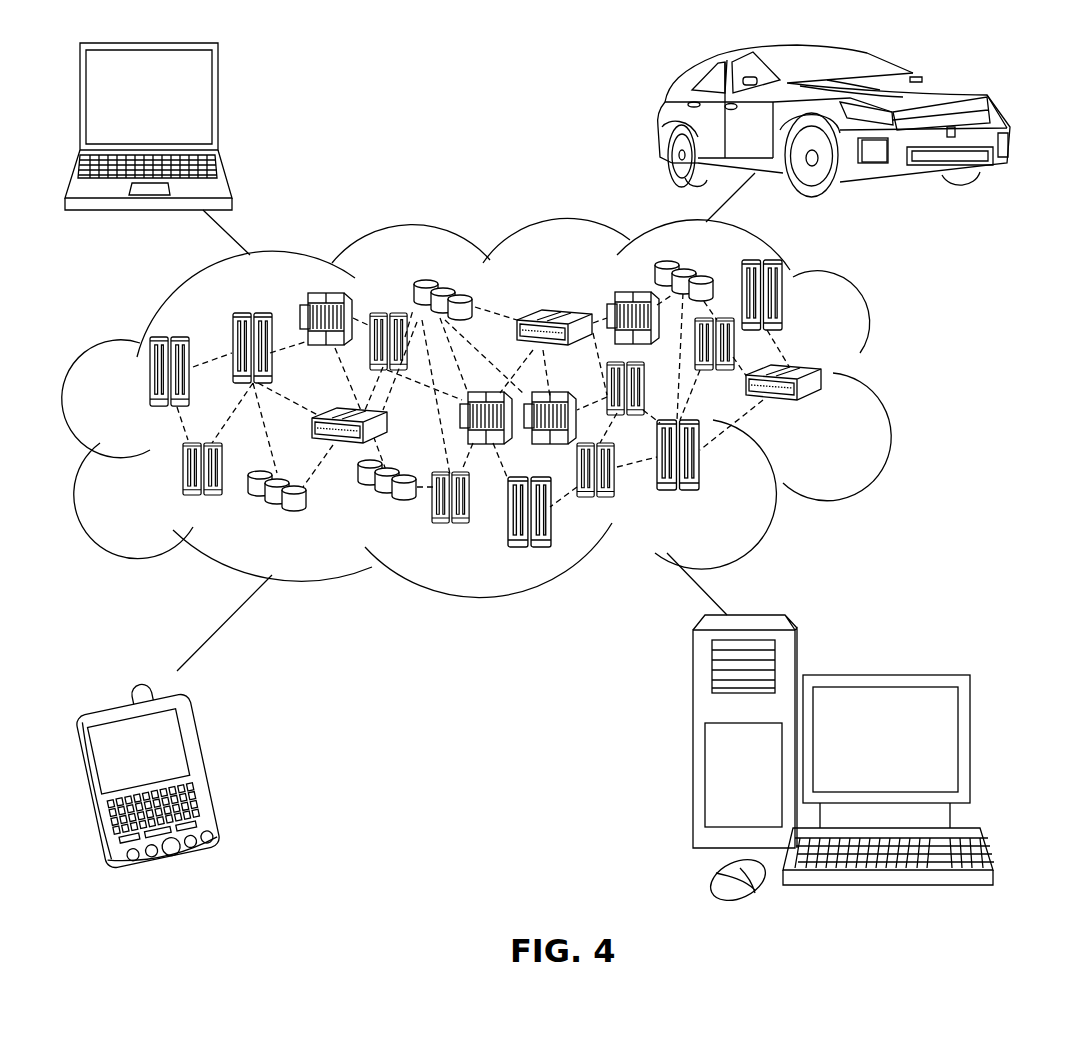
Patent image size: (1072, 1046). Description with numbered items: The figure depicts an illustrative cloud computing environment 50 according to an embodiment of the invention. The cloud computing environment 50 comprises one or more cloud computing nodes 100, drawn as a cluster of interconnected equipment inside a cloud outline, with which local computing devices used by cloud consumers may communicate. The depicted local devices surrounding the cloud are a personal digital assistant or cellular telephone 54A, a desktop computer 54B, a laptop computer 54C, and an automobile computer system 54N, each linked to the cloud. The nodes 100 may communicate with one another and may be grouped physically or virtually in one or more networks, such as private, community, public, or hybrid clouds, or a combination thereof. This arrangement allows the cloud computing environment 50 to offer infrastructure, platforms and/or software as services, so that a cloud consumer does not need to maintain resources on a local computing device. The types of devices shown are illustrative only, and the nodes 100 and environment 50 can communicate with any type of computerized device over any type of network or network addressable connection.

The laptop computer 54C is at (220, 106).
The automobile computer system 54N is at (660, 124).
The cloud computing environment 50 is at (882, 383).
The cloud computing nodes 100 is at (840, 418).
The personal digital assistant (PDA) or cellular telephone 54A is at (207, 770).
The desktop computer 54B is at (882, 675).